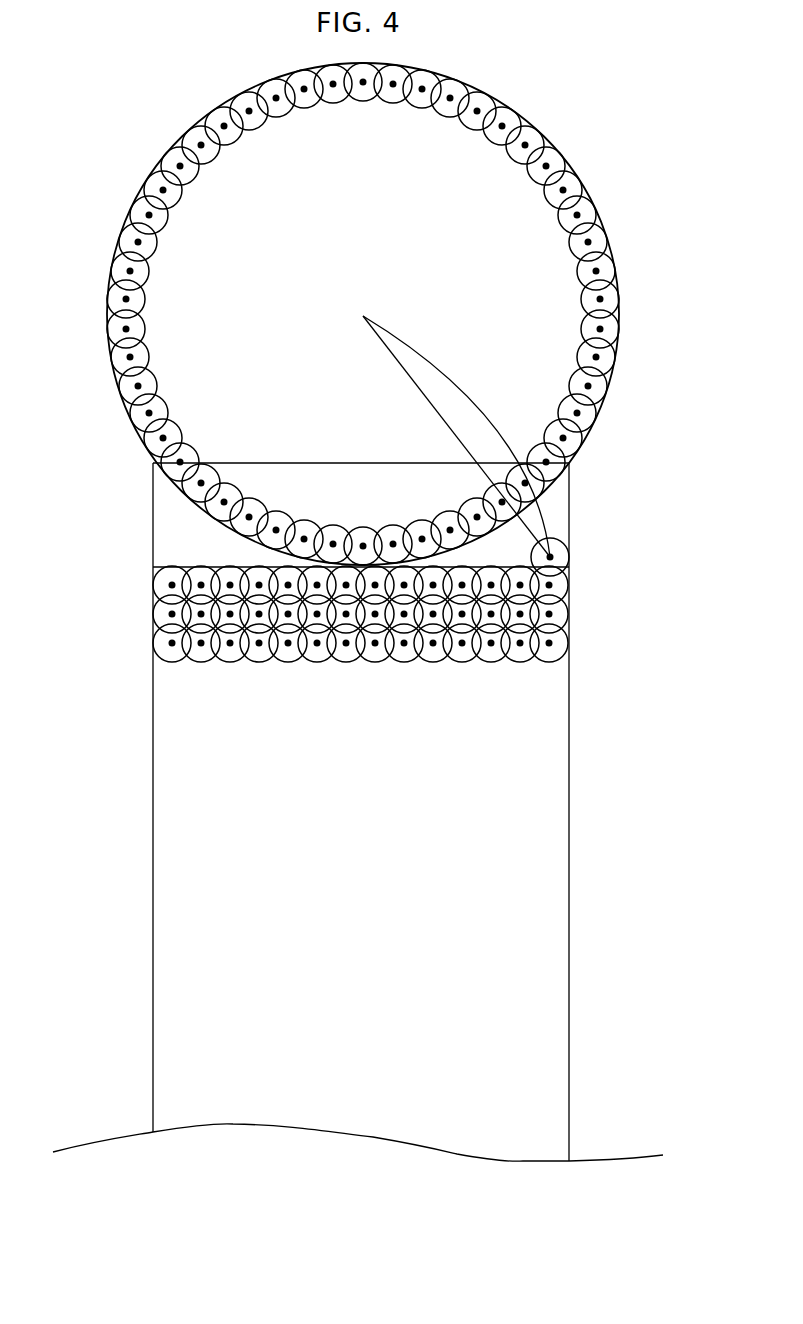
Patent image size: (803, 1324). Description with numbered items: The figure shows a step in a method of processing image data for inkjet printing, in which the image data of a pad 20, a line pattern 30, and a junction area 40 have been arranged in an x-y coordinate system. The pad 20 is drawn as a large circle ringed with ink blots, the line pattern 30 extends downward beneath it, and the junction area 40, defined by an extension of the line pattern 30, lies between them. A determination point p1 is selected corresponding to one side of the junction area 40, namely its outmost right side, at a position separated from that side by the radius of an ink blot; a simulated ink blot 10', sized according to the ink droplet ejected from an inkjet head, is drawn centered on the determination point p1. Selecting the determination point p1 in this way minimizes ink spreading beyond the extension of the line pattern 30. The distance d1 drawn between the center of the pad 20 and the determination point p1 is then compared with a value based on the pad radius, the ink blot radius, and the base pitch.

The pad 20 is at (620, 318).
The line pattern 30 is at (570, 717).
The junction area 40 is at (570, 505).
The simulated ink blot 10' is at (592, 546).
The determination point p1 is at (554, 557).
The distance d1 is at (456, 436).